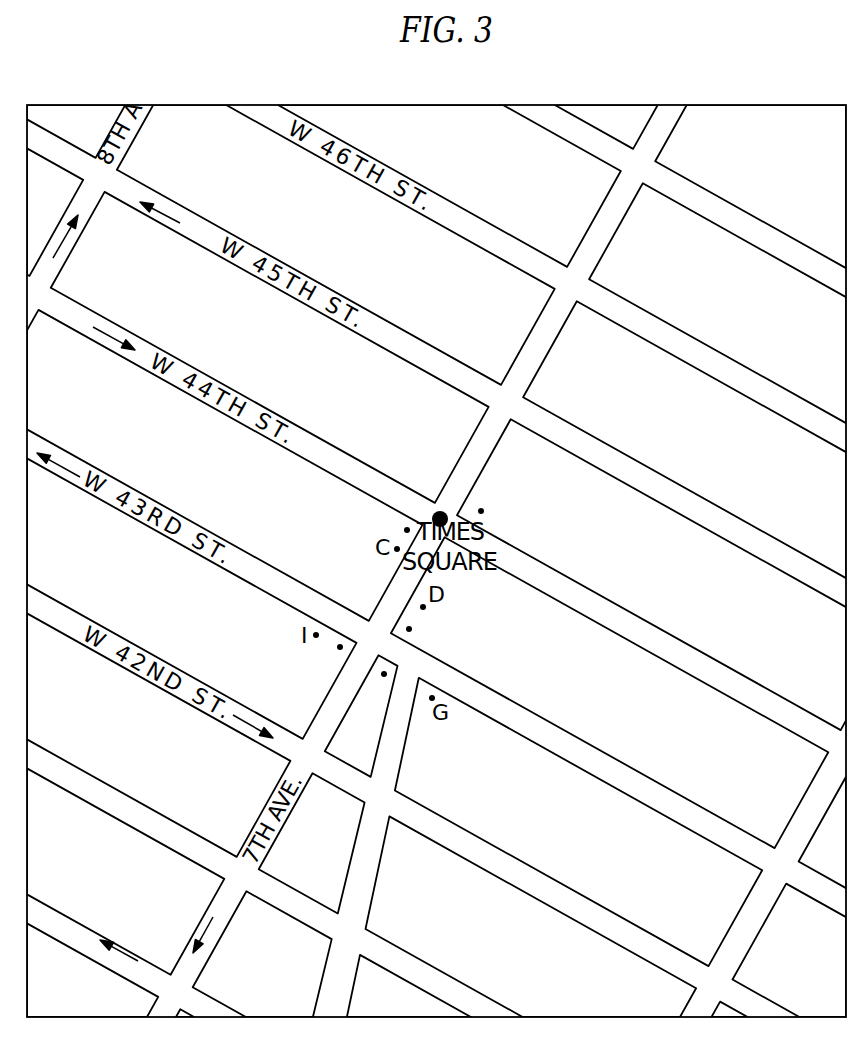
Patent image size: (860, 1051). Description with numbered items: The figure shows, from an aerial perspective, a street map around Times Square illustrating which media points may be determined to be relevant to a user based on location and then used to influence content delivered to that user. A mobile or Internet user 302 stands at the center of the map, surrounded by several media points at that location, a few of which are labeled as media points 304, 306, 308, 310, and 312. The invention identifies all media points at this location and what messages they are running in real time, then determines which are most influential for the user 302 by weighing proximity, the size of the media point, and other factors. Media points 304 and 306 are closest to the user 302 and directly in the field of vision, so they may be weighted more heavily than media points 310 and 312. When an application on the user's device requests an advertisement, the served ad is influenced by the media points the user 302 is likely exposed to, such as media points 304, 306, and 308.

The mobile or Internet user 302 is at (433, 506).
The media point 304 is at (509, 509).
The media point 306 is at (382, 529).
The media point 308 is at (437, 631).
The media point 310 is at (312, 651).
The media point 312 is at (367, 703).